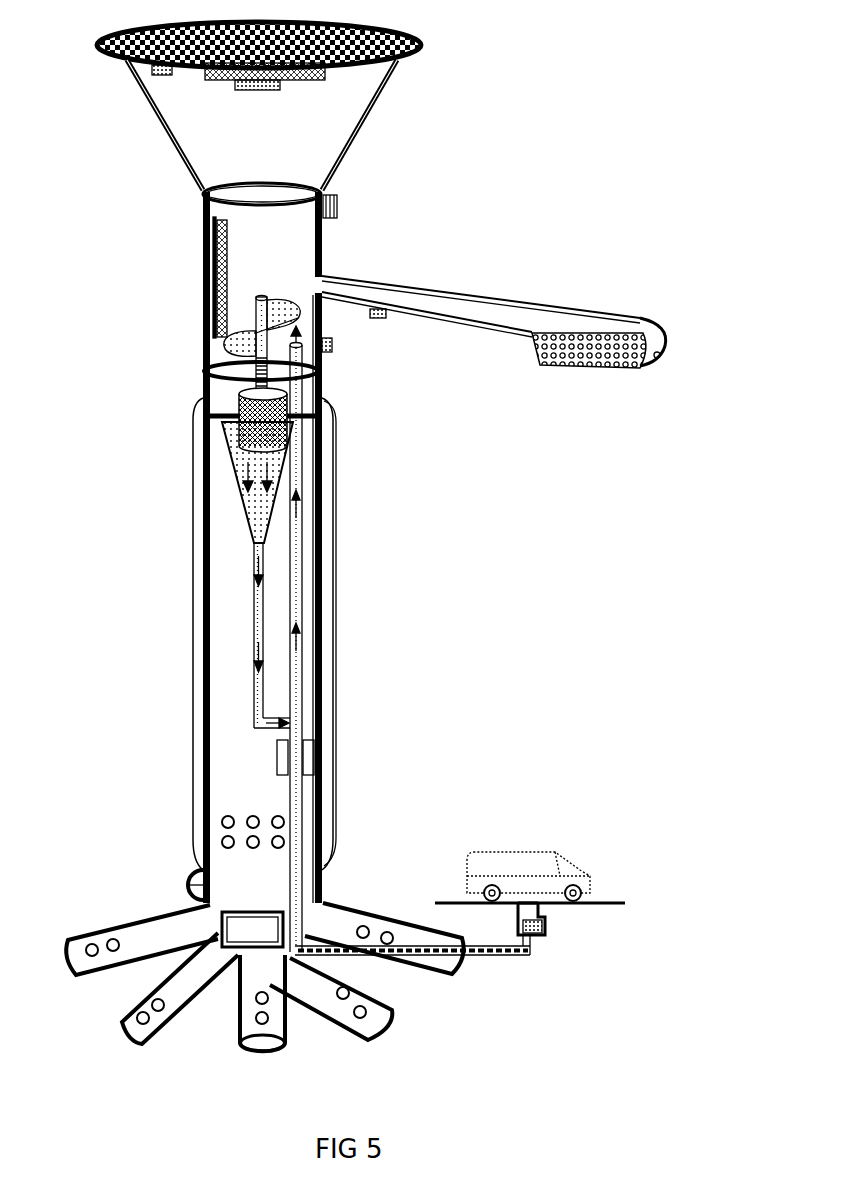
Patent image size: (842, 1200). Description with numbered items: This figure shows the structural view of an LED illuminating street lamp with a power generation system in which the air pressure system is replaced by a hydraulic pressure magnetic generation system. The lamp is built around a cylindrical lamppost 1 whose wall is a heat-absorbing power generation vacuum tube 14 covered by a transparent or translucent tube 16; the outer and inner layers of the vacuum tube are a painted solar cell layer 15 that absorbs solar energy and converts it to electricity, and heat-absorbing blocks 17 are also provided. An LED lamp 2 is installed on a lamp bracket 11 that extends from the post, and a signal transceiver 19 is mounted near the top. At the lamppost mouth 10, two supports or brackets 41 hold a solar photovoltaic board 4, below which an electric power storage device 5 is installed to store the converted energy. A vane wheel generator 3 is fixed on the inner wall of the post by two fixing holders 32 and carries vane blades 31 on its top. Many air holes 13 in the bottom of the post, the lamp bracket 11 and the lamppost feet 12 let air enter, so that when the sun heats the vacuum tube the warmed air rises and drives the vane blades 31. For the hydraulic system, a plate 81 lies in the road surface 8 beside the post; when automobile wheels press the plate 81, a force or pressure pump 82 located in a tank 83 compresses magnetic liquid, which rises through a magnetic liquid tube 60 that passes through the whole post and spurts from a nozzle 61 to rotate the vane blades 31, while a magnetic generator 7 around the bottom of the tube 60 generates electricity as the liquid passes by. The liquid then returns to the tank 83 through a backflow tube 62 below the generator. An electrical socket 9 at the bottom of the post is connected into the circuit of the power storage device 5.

The lamppost 1 is at (240, 570).
The LED lamp 2 is at (245, 87).
The vane wheel generator 3 is at (268, 428).
The solar photovoltaic board 4 is at (421, 45).
The electric power storage device 5 is at (205, 70).
The magnetic generator 7 is at (305, 753).
The road surface 8 is at (625, 903).
The electrical socket 9 is at (190, 886).
The lamppost mouth 10 is at (235, 189).
The lamp bracket 11 is at (531, 316).
The lamppost feet 12 is at (345, 982).
The air holes 13 is at (253, 822).
The heat-absorbing power generation vacuum tube 14 is at (313, 463).
The painted solar cell layer 15 is at (325, 515).
The transparent or translucent tube 16 is at (333, 558).
The heat-absorbing blocks 17 is at (250, 927).
The signal transceiver 19 is at (337, 205).
The vane blades 31 is at (278, 298).
The fixing holders 32 is at (240, 414).
The bracket 41 is at (377, 97).
The magnetic liquid tube 60 is at (302, 590).
The nozzle 61 is at (230, 347).
The backflow tube 62 is at (262, 622).
The plate 81 is at (522, 903).
The pressure pump 82 is at (545, 912).
The tank 83 is at (545, 928).